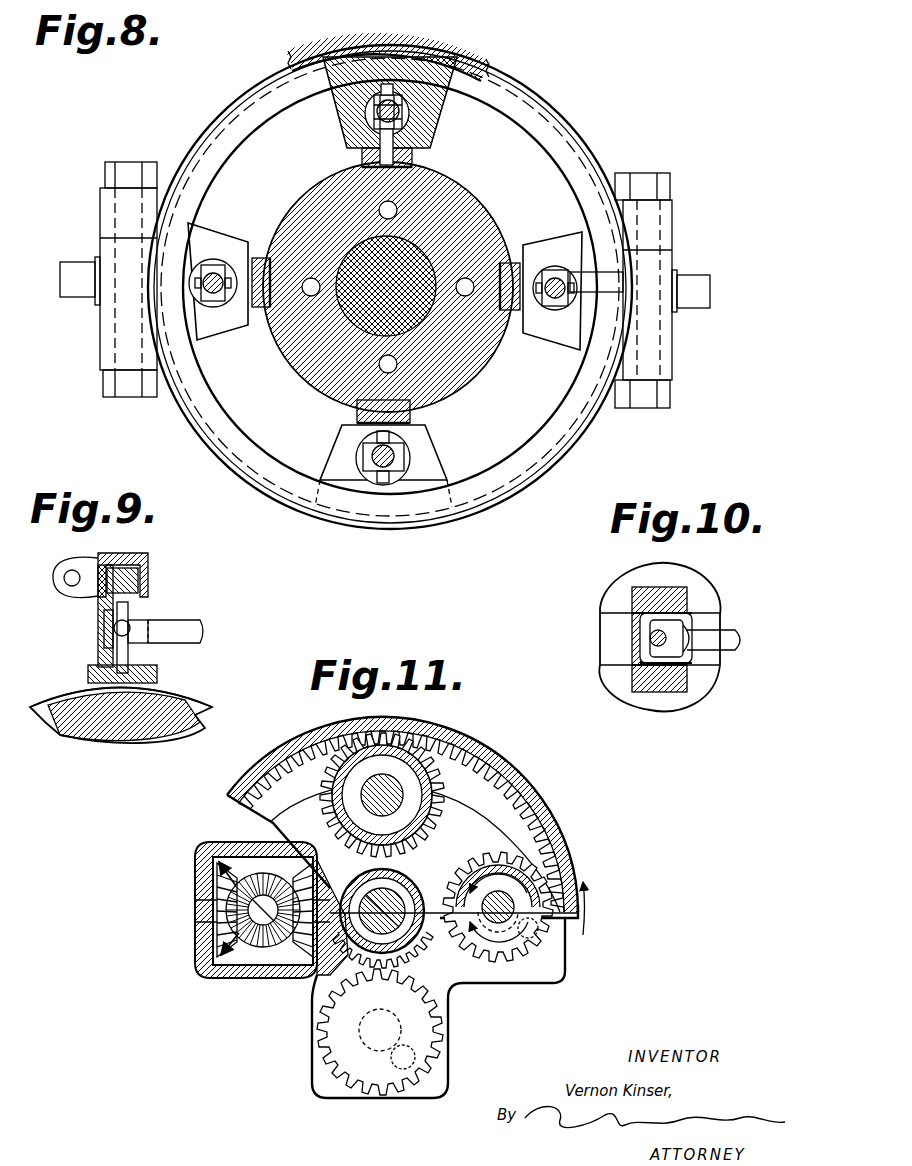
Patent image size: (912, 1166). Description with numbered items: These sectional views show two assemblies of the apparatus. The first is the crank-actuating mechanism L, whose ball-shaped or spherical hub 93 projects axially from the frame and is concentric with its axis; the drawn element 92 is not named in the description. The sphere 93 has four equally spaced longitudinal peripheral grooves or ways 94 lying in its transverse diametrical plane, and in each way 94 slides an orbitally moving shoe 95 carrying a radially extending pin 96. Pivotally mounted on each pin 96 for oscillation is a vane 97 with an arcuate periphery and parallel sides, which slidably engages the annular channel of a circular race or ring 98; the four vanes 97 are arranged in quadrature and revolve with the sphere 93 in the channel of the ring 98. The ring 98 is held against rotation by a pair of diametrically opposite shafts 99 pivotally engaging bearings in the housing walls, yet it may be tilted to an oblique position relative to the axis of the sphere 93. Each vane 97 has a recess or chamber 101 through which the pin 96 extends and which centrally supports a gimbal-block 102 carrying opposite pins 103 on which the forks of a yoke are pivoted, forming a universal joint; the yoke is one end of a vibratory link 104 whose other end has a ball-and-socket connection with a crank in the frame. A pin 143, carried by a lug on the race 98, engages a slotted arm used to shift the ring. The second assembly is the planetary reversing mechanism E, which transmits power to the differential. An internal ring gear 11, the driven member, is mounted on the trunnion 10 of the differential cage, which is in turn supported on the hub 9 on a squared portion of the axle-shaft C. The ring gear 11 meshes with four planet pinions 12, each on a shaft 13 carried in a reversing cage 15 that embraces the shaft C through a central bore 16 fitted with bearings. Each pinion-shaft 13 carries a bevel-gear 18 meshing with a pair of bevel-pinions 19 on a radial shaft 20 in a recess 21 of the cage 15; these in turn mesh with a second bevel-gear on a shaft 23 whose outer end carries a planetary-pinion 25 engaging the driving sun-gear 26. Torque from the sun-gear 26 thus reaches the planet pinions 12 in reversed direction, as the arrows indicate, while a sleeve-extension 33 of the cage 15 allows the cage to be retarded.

In FIG. 8, the hub 9 is at (388, 170).
In FIG. 11, the hub 9 is at (395, 888).
In FIG. 8, the trunnion 10 is at (470, 108).
In FIG. 11, the trunnion 10 is at (372, 892).
In FIG. 11, the internal ring gear 11 is at (512, 771).
In FIG. 11, the planet pinion 12 is at (442, 806).
In FIG. 11, the pinion-shaft 13 is at (394, 805).
In FIG. 11, the reversing cage 15 is at (197, 953).
In FIG. 11, the central bore 16 is at (312, 966).
In FIG. 11, the bevel-gear 18 is at (263, 975).
In FIG. 11, the bevel-pinion 19 is at (225, 970).
In FIG. 11, the shaft 20 is at (205, 913).
In FIG. 11, the recess 21 is at (212, 862).
In FIG. 11, the shaft 23 is at (464, 993).
In FIG. 11, the planetary-pinion 25 is at (562, 948).
In FIG. 11, the sun-gear 26 is at (420, 968).
In FIG. 11, the sleeve-extension 33 is at (400, 958).
In FIG. 8, the disc hole 92 is at (302, 285).
In FIG. 8, the spherical hub 93 is at (289, 358).
In FIG. 9, the spherical hub 93 is at (200, 706).
In FIG. 10, the spherical hub 93 is at (622, 584).
In FIG. 8, the way 94 is at (362, 165).
In FIG. 9, the way 94 is at (180, 690).
In FIG. 10, the way 94 is at (628, 614).
In FIG. 8, the shoe 95 is at (358, 161).
In FIG. 9, the shoe 95 is at (158, 677).
In FIG. 10, the shoe 95 is at (628, 646).
In FIG. 8, the pin 96 is at (352, 136).
In FIG. 9, the pin 96 is at (128, 650).
In FIG. 10, the pin 96 is at (676, 655).
In FIG. 8, the vane 97 is at (440, 118).
In FIG. 9, the vane 97 is at (98, 607).
In FIG. 10, the vane 97 is at (690, 690).
In FIG. 8, the ring 98 is at (572, 138).
In FIG. 9, the ring 98 is at (135, 555).
In FIG. 8, the shaft 99 is at (87, 262).
In FIG. 8, the recess 101 is at (425, 92).
In FIG. 9, the recess 101 is at (104, 620).
In FIG. 10, the recess 101 is at (692, 650).
In FIG. 8, the gimbal-block 102 is at (378, 60).
In FIG. 9, the gimbal-block 102 is at (124, 621).
In FIG. 10, the gimbal-block 102 is at (670, 630).
In FIG. 8, the pin 103 is at (323, 62).
In FIG. 9, the pin 103 is at (136, 624).
In FIG. 10, the pin 103 is at (666, 622).
In FIG. 8, the vibratory link 104 is at (410, 97).
In FIG. 9, the vibratory link 104 is at (205, 630).
In FIG. 10, the vibratory link 104 is at (740, 641).
In FIG. 9, the pin 143 is at (64, 578).
In FIG. 8, the axle-shaft C is at (432, 320).
In FIG. 11, the planetary reversing mechanism E is at (216, 809).
In FIG. 8, the mechanism L is at (216, 74).